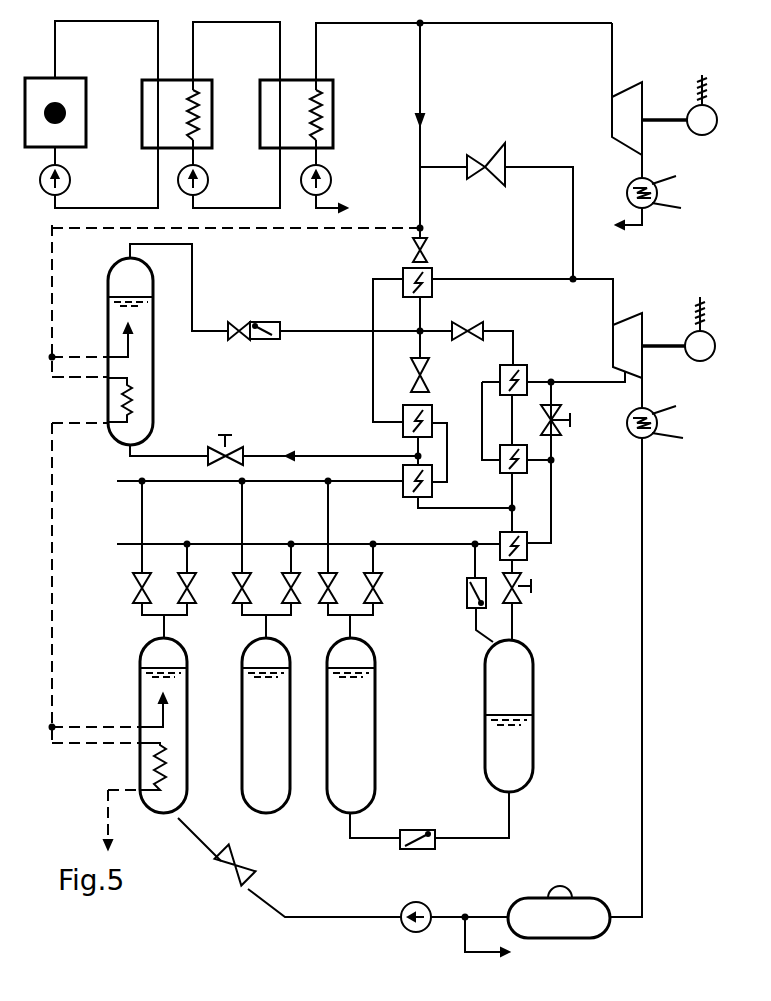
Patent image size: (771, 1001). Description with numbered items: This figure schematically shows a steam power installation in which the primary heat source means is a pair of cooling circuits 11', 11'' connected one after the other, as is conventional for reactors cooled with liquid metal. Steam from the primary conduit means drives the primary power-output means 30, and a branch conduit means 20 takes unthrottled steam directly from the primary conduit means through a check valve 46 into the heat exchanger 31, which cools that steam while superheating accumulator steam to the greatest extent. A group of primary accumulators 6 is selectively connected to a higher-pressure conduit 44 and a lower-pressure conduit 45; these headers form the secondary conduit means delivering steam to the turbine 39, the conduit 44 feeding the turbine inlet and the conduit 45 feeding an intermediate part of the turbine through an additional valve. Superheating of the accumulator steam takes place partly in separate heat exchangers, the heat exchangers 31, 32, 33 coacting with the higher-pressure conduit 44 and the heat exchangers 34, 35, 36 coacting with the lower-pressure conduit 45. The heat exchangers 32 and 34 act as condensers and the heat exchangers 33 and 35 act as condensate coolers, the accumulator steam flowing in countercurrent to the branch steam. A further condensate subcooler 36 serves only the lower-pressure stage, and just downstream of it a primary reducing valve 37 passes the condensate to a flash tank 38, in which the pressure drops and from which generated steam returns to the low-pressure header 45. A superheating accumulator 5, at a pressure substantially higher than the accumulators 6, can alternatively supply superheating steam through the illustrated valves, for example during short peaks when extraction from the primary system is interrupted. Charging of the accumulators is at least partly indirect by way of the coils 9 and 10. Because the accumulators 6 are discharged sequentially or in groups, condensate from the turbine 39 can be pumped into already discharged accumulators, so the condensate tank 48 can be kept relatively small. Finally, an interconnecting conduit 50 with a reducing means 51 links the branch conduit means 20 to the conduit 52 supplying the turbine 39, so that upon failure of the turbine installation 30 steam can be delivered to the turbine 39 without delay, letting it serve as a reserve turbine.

The cooling circuit 11' is at (91, 114).
The cooling circuit 11'' is at (211, 115).
The branch conduit means 20 is at (425, 58).
The primary power-output means 30 is at (641, 85).
The turbine 39 is at (627, 322).
The interconnecting conduit 50 is at (441, 162).
The reducing means 51 is at (508, 158).
The conduit 52 is at (500, 275).
The check valve 46 is at (413, 250).
The heat exchanger 31 is at (430, 270).
The heat exchanger 32 is at (440, 402).
The heat exchanger 33 is at (433, 490).
The heat exchanger 34 is at (524, 380).
The heat exchanger 35 is at (519, 474).
The condensate subcooler 36 is at (499, 534).
The primary reducing valve 37 is at (519, 578).
The conduit 44 is at (170, 483).
The conduit 45 is at (258, 540).
The superheating accumulator 5 is at (153, 308).
The coil 9 is at (126, 414).
The accumulator 6 is at (331, 709).
The coil 10 is at (165, 781).
The flash tank 38 is at (527, 709).
The condensate tank 48 is at (537, 908).